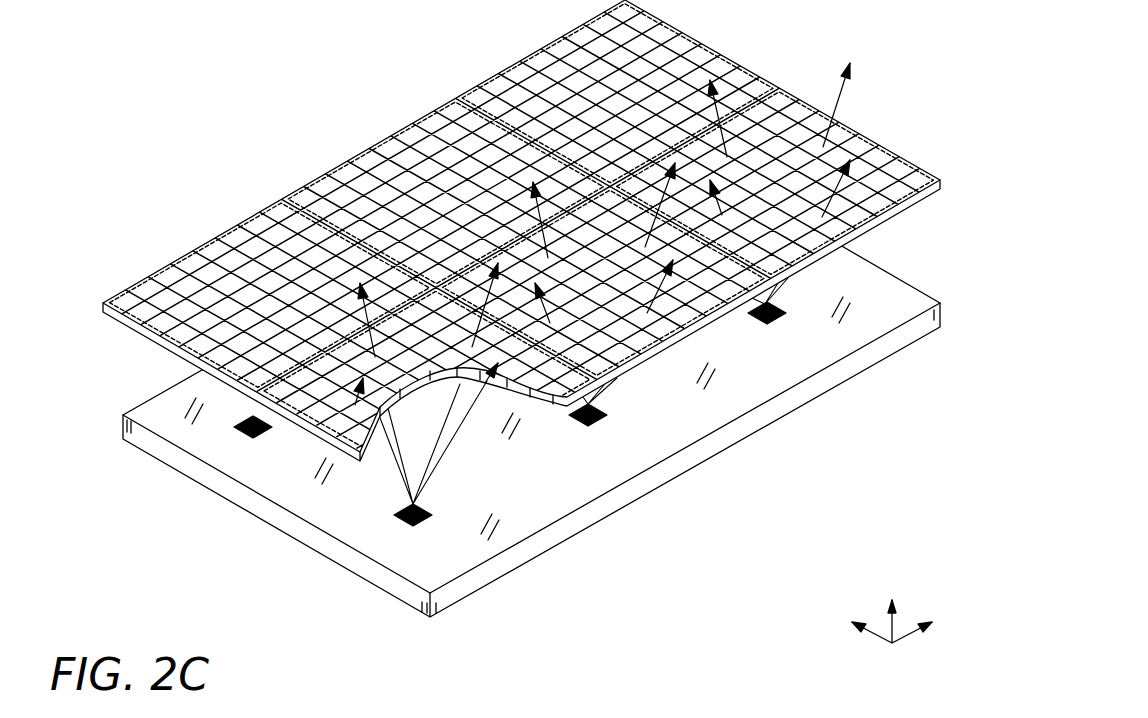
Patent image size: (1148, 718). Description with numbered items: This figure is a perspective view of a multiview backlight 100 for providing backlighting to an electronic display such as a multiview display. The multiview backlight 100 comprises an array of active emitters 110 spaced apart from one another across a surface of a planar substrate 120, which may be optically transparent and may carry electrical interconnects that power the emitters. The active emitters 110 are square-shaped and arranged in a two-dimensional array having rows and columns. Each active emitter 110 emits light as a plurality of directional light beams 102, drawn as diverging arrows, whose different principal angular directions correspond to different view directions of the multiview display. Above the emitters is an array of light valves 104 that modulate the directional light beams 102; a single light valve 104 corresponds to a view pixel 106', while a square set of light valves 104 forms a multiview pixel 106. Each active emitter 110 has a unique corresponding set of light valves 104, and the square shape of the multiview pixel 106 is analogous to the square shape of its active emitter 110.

The multiview backlight 100 is at (160, 373).
The directional light beams 102 is at (868, 80).
The light valves 104 is at (778, 48).
The multiview pixel 106 is at (598, 241).
The view pixel 106' is at (259, 281).
The active emitters 110 is at (432, 527).
The planar substrate 120 is at (262, 507).